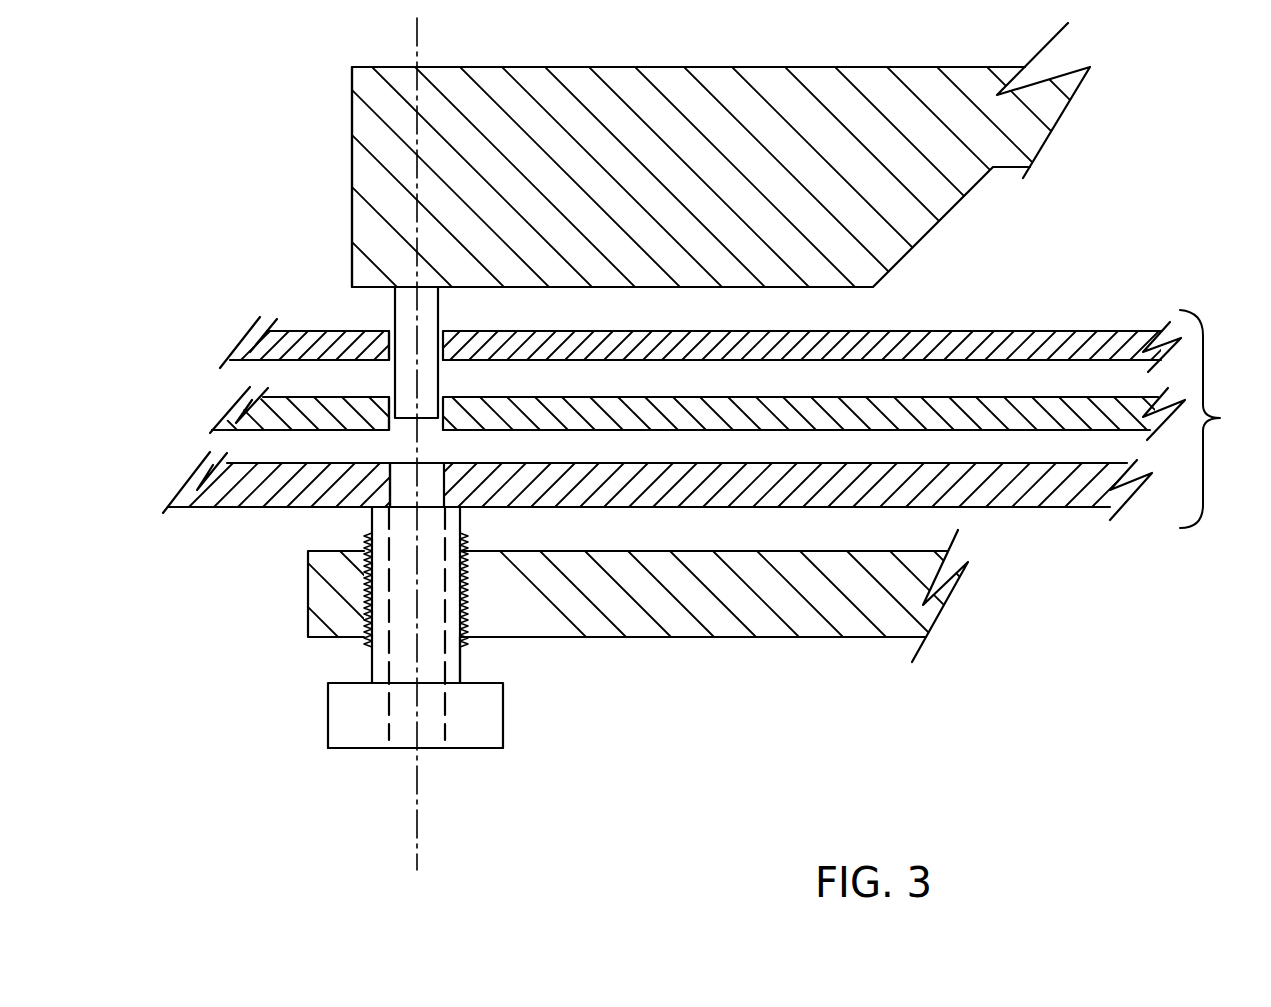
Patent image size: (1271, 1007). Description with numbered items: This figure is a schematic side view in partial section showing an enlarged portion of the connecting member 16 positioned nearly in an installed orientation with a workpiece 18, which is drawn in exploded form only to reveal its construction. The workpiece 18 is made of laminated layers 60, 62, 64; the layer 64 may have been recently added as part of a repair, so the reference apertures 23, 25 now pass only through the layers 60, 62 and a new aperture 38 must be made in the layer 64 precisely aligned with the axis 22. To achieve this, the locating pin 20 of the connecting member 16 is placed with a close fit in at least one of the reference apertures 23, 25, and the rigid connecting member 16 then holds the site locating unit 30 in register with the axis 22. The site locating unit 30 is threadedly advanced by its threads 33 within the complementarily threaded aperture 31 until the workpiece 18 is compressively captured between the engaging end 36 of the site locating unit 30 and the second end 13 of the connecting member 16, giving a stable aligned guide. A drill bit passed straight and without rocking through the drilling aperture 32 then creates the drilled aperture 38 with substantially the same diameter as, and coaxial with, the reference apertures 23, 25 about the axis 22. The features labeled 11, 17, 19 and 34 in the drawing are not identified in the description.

The mounting structure 11 is at (308, 592).
The second end 13 is at (352, 238).
The connecting member 16 is at (578, 66).
The lower side 17 is at (1050, 536).
The workpiece 18 is at (1222, 419).
The upper side 19 is at (979, 305).
The locating pin 20 is at (440, 298).
The axis 22 is at (418, 30).
The reference aperture 23 is at (389, 332).
The reference aperture 25 is at (393, 398).
The site locating unit 30 is at (376, 750).
The threaded aperture 31 is at (462, 552).
The drilling aperture 32 is at (425, 750).
The threads 33 is at (462, 645).
The bolt head 34 is at (504, 720).
The engaging end 36 is at (371, 510).
The drilled aperture 38 is at (400, 462).
The layer 60 is at (233, 350).
The layer 62 is at (216, 423).
The layer 64 is at (170, 497).